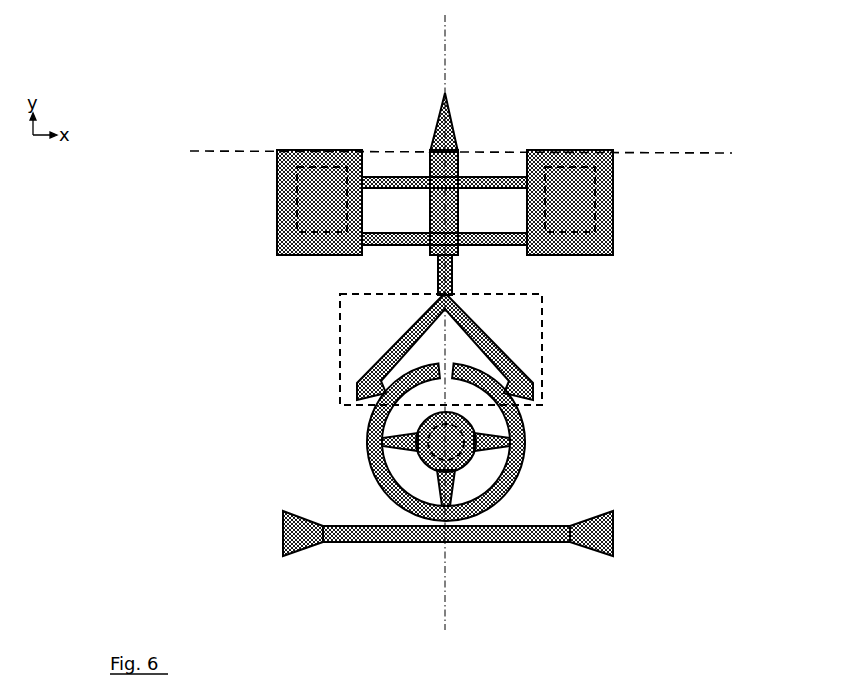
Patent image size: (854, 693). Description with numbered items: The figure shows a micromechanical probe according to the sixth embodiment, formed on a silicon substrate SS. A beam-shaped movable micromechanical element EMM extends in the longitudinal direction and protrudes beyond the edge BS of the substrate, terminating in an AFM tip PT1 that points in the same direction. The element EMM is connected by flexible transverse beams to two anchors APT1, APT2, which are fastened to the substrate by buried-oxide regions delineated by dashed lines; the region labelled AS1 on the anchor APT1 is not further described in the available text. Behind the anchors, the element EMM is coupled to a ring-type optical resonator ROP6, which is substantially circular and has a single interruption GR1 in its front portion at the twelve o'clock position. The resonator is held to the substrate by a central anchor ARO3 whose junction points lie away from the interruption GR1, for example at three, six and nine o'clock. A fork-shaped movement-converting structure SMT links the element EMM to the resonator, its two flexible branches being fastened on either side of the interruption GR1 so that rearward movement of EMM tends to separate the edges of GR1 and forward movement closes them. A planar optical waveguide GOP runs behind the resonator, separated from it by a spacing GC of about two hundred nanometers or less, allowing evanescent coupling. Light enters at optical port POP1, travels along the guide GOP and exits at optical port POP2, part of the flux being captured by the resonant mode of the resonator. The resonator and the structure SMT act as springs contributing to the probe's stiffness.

The AFM tip PT1 is at (455, 120).
The movable micromechanical element EMM is at (460, 165).
The edge of the substrate BS is at (632, 165).
The anchor APT1 is at (277, 170).
The anchor APT2 is at (613, 212).
The first anchor structure AS1 is at (277, 201).
The silicon substrate SS is at (461, 181).
The movement-converting structure SMT is at (505, 350).
The interruption GR1 is at (380, 364).
The central anchor ARO3 is at (417, 434).
The optical resonator ROP6 is at (530, 433).
The optical port POP1 is at (283, 536).
The optical port POP2 is at (615, 525).
The planar optical waveguide GOP is at (378, 543).
The spacing GC is at (413, 540).